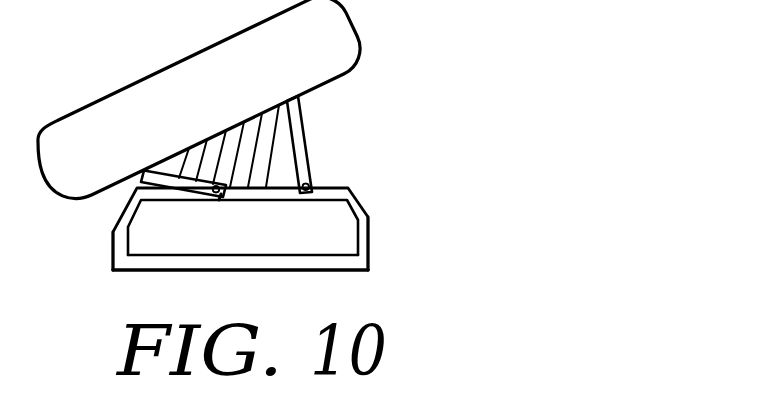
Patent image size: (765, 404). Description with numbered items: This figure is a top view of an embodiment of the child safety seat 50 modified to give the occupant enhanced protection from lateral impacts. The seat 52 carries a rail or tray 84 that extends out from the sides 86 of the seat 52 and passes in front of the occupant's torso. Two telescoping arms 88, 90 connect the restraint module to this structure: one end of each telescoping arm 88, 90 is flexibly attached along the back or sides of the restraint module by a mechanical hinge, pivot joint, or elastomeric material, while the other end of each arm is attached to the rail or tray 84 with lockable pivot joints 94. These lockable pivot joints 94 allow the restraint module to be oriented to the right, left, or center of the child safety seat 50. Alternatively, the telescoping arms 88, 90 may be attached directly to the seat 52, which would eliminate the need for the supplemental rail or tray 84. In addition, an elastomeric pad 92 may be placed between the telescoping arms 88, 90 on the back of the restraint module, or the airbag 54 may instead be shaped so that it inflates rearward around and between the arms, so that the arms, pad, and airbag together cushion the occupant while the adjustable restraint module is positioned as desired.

The child safety seat 50 is at (383, 278).
The seat 52 is at (192, 262).
The airbag 54 is at (337, 48).
The rail or tray 84 is at (348, 194).
The sides 86 is at (120, 243).
The telescoping arm 88 is at (295, 126).
The telescoping arm 90 is at (184, 201).
The elastomeric pad 92 is at (264, 157).
The lockable pivot joints 94 is at (301, 202).